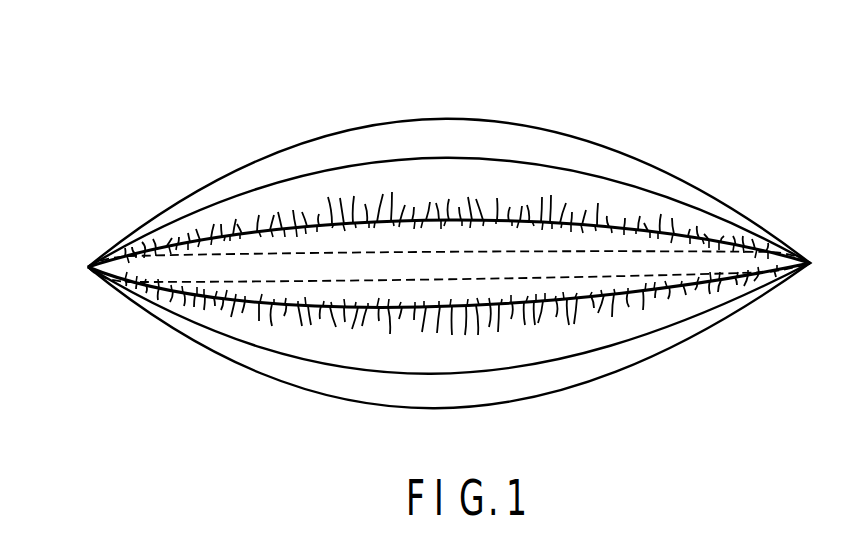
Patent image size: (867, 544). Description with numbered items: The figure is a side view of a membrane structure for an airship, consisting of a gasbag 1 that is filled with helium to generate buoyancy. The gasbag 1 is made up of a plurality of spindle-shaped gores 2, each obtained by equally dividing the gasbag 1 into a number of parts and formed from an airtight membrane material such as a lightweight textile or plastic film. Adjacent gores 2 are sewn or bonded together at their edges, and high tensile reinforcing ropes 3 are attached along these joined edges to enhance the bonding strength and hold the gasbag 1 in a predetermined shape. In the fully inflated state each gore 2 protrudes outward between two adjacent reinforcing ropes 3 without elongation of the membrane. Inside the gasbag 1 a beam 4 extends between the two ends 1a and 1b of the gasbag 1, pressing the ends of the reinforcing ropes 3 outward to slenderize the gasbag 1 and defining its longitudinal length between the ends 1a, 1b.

The gasbag 1 is at (447, 92).
The end of the gasbag 1a is at (88, 267).
The end of the gasbag 1b is at (810, 263).
The gore 2 is at (560, 142).
The reinforcing rope 3 is at (283, 300).
The beam 4 is at (557, 280).